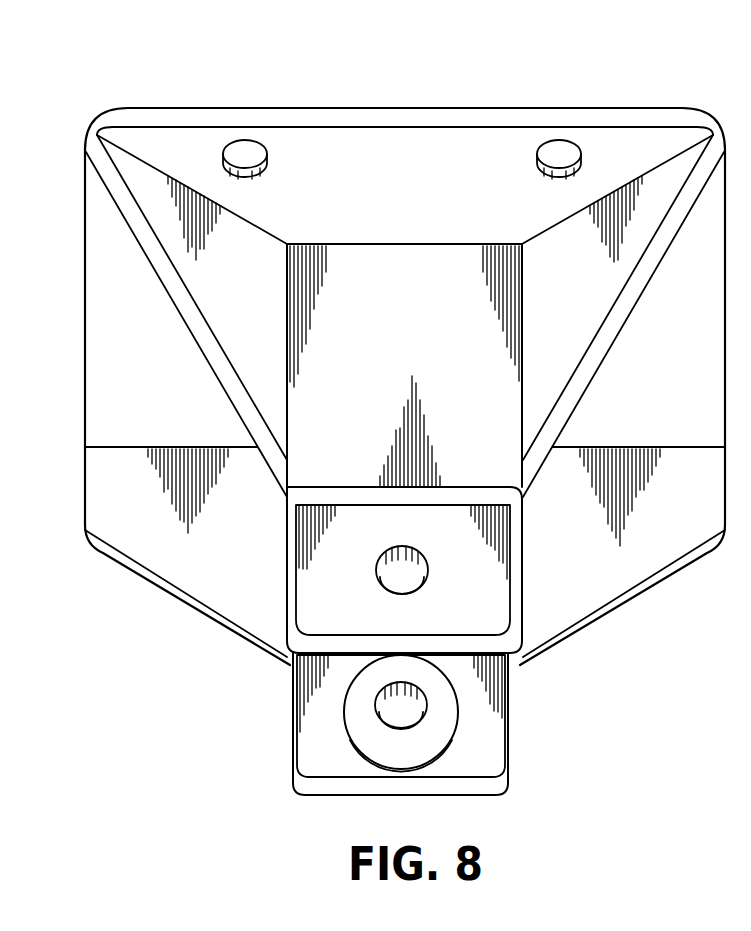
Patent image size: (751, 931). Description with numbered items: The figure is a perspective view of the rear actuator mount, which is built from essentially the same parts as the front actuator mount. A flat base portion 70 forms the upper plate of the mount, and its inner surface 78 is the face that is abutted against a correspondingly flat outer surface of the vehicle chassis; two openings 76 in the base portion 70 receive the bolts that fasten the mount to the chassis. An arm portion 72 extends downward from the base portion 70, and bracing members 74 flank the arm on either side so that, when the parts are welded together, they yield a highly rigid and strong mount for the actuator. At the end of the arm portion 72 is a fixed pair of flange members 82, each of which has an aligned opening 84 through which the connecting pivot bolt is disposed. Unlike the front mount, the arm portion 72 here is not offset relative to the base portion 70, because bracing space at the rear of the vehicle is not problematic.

The base portion 70 is at (421, 194).
The arm portion 72 is at (421, 347).
The bracing members 74 is at (255, 317).
The openings 76 is at (263, 146).
The inner surface 78 is at (660, 109).
The flange members 82 is at (356, 587).
The aligned opening 84 is at (427, 577).